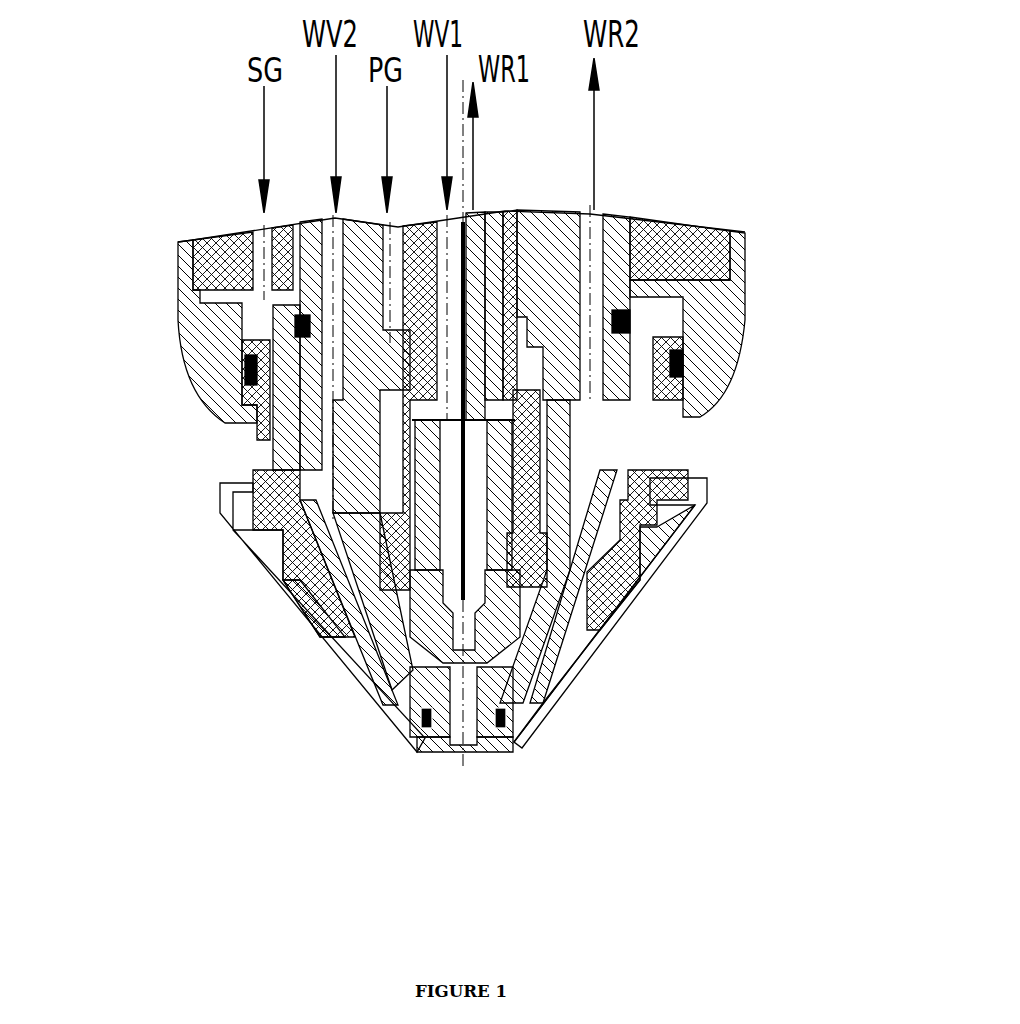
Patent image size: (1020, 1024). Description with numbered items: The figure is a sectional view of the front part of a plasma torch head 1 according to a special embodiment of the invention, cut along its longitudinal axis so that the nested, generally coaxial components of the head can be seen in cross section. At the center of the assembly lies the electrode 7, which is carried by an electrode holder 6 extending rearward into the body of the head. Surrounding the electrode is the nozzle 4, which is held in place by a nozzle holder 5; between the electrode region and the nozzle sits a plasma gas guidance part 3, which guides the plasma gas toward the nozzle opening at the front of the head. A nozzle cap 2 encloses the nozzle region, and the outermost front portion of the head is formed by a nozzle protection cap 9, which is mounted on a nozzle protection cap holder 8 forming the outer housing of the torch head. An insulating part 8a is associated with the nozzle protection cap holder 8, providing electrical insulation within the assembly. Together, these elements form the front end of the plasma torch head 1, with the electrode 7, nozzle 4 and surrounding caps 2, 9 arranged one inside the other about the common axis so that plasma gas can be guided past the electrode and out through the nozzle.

The plasma torch head 1 is at (148, 285).
The nozzle cap 2 is at (512, 714).
The plasma gas guidance part 3 is at (519, 546).
The nozzle 4 is at (495, 683).
The nozzle holder 5 is at (545, 248).
The electrode holder 6 is at (505, 405).
The electrode 7 is at (494, 596).
The nozzle protection cap holder 8 is at (714, 310).
The insulating part 8a is at (653, 485).
The nozzle protection cap 9 is at (578, 648).